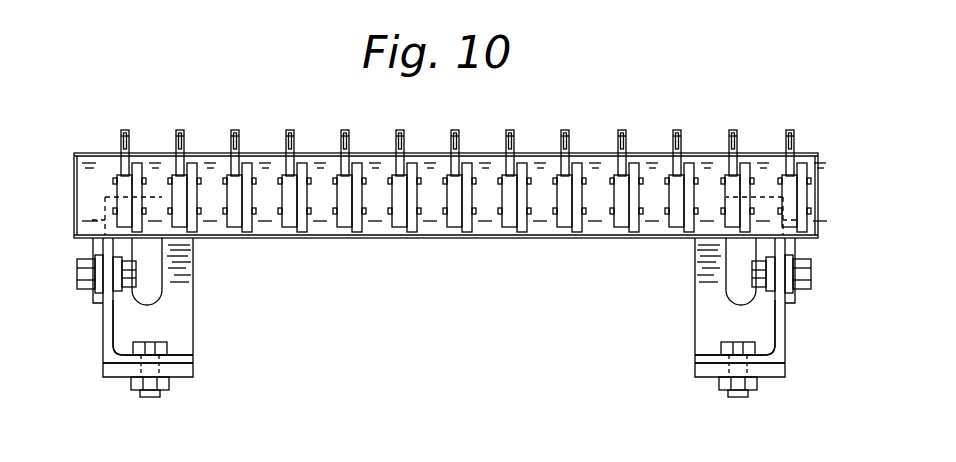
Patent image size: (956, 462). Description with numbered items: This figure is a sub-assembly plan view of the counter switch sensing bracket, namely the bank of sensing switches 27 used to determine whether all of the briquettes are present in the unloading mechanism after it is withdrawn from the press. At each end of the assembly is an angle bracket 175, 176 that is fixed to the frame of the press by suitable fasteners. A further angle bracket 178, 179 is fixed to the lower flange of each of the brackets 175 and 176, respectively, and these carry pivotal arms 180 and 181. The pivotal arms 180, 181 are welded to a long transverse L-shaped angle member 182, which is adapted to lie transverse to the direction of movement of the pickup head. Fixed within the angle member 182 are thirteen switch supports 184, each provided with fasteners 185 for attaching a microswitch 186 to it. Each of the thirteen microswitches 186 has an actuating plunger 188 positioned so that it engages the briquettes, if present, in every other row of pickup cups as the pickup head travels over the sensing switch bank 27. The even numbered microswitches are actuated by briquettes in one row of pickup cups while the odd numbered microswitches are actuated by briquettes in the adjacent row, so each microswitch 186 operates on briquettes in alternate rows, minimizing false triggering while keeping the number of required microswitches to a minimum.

The sensing switch bank 27 is at (100, 337).
The angle bracket 175 is at (125, 378).
The angle bracket 176 is at (713, 377).
The angle bracket 178 is at (117, 327).
The angle bracket 179 is at (775, 330).
The pivotal arm 180 is at (80, 253).
The pivotal arm 181 is at (803, 240).
The L-shaped angle member 182 is at (377, 238).
The switch support 184 is at (135, 168).
The fastener 185 is at (480, 170).
The microswitch 186 is at (190, 136).
The actuating plunger 188 is at (229, 145).